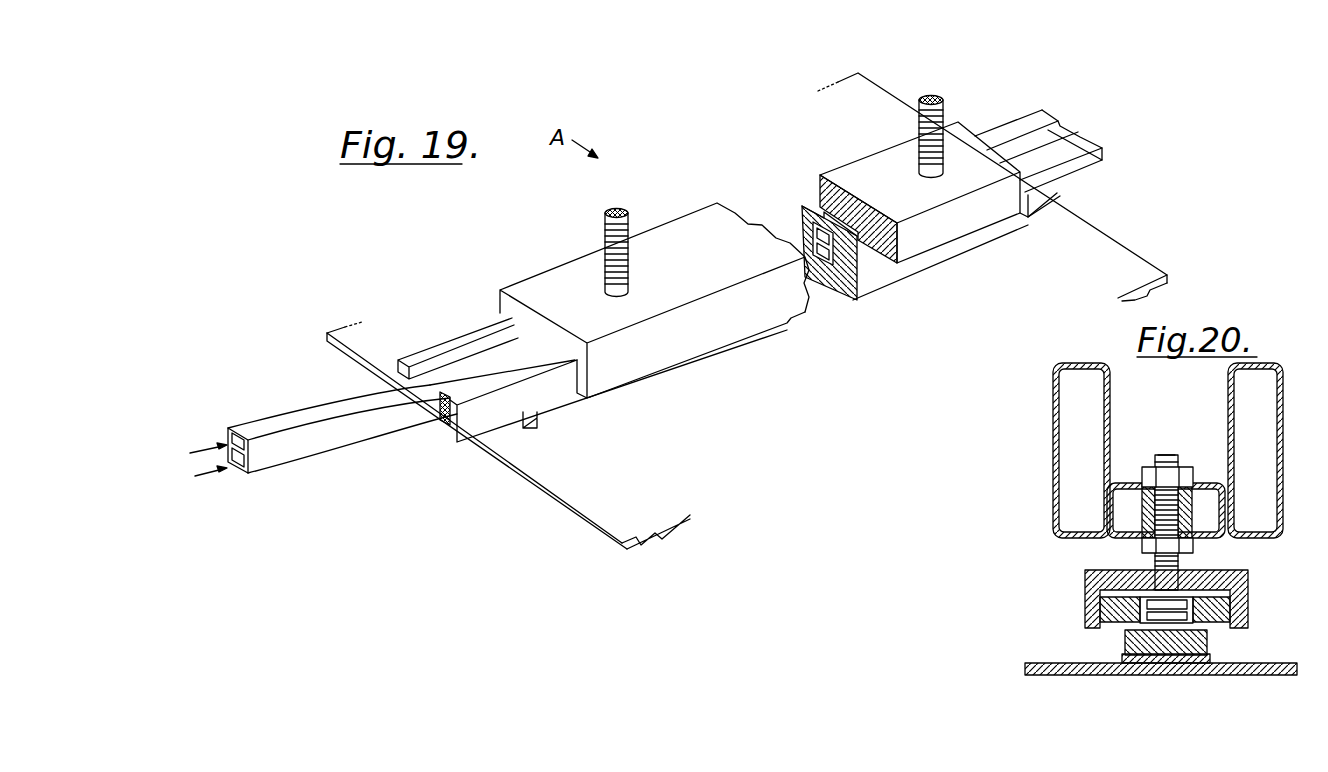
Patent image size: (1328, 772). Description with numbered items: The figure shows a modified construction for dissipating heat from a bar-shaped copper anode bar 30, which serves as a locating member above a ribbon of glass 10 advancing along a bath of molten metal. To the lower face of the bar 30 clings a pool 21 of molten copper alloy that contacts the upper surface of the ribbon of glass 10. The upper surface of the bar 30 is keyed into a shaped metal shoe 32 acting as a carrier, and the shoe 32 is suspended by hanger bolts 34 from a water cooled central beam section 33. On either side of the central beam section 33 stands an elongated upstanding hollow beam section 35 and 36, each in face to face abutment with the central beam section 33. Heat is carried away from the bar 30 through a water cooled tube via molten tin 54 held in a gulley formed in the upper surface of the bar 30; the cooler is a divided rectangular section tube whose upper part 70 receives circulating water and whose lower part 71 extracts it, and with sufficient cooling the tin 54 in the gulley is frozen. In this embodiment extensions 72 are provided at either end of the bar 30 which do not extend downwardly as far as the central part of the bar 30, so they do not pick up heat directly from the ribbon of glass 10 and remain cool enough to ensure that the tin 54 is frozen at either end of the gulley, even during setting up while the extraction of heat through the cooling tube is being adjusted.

In FIG. 19, the ribbon of glass 10 is at (357, 343).
In FIG. 20, the ribbon of glass 10 is at (1147, 668).
In FIG. 19, the pool of molten copper alloy 21 is at (591, 407).
In FIG. 20, the pool of molten copper alloy 21 is at (1205, 655).
In FIG. 19, the copper anode bar 30 is at (1028, 218).
In FIG. 20, the copper anode bar 30 is at (1183, 658).
In FIG. 19, the metal shoe 32 is at (721, 213).
In FIG. 20, the metal shoe 32 is at (1101, 579).
In FIG. 20, the central beam section 33 is at (1130, 483).
In FIG. 19, the hanger bolts 34 is at (628, 220).
In FIG. 20, the hanger bolts 34 is at (1178, 562).
In FIG. 20, the hollow beam section 35 is at (1080, 364).
In FIG. 20, the hollow beam section 36 is at (1278, 372).
In FIG. 19, the molten tin 54 is at (827, 288).
In FIG. 20, the molten tin 54 is at (1246, 579).
In FIG. 19, the upper part of cooler tube 70 is at (239, 428).
In FIG. 20, the upper part of cooler tube 70 is at (1137, 620).
In FIG. 19, the lower part of cooler tube 71 is at (239, 470).
In FIG. 20, the lower part of cooler tube 71 is at (1140, 622).
In FIG. 19, the extensions 72 is at (456, 444).